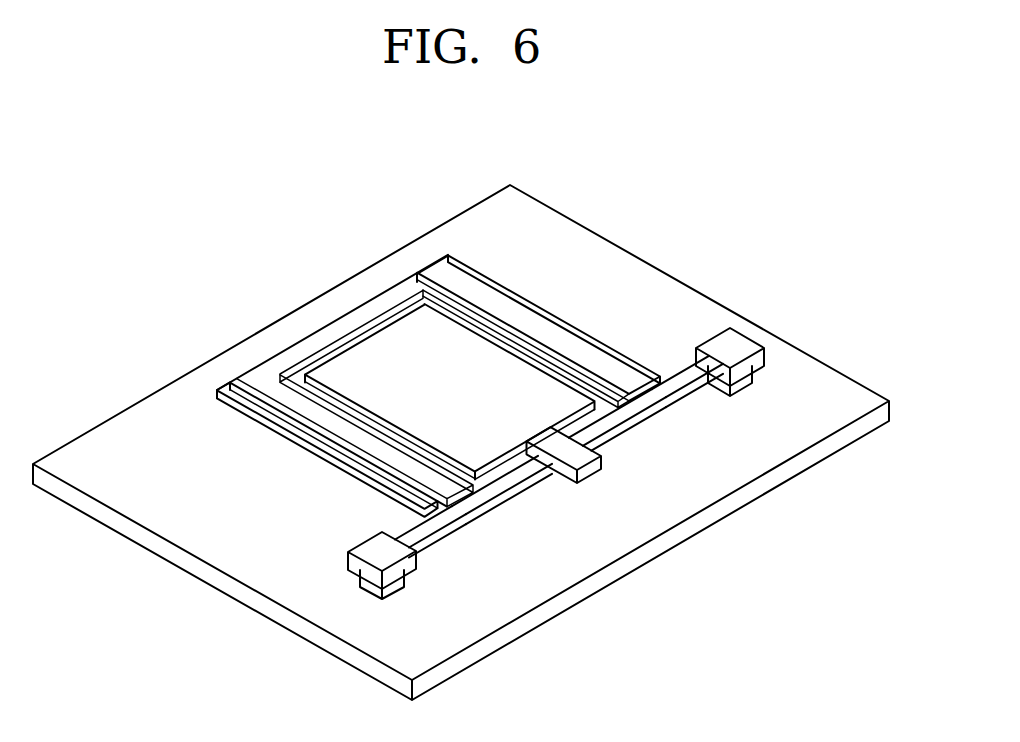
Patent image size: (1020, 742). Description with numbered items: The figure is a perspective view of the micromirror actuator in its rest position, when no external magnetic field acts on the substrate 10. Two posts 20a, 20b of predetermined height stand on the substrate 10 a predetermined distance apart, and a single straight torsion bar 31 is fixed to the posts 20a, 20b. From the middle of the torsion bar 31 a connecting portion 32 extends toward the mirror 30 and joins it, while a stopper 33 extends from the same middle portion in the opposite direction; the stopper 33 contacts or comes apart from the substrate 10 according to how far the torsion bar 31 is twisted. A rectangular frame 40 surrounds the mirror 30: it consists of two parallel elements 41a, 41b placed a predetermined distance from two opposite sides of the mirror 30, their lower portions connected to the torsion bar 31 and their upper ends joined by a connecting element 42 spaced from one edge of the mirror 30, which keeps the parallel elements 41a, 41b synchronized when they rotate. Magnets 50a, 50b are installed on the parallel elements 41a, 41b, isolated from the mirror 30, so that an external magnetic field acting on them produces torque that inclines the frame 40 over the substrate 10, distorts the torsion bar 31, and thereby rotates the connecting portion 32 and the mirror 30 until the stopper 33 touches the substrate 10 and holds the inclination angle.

The substrate 10 is at (798, 363).
The post 20a is at (377, 557).
The post 20b is at (740, 343).
The mirror 30 is at (435, 396).
The torsion bar 31 is at (433, 535).
The connecting portion 32 is at (538, 447).
The stopper 33 is at (592, 478).
The rectangular frame 40 is at (400, 336).
The parallel element 41a is at (275, 417).
The parallel element 41b is at (555, 315).
The connecting element 42 is at (335, 328).
The magnet 50a is at (252, 375).
The magnet 50b is at (437, 268).